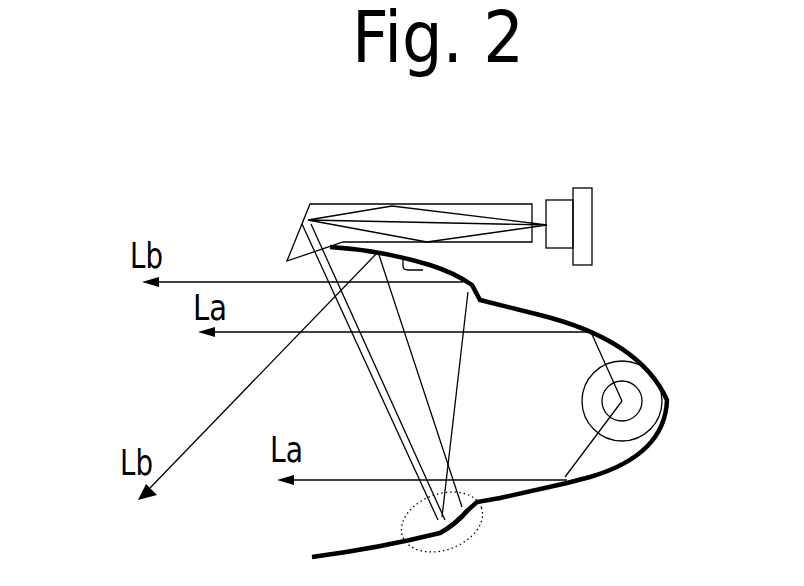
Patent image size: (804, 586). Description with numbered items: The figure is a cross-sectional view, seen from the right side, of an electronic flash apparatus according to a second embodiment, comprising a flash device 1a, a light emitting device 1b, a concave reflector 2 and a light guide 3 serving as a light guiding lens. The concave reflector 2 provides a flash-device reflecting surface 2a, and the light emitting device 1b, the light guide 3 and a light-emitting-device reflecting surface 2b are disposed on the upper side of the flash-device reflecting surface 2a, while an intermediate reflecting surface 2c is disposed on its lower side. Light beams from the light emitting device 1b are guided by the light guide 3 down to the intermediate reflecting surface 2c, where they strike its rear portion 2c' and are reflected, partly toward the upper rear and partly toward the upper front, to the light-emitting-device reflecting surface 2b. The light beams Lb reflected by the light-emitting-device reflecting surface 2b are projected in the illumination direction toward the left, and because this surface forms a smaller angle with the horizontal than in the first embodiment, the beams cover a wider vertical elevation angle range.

The flash device 1a is at (622, 401).
The light emitting device 1b is at (547, 225).
The concave reflector 2 is at (623, 323).
The flash-device reflecting surface 2a is at (548, 320).
The light-emitting-device reflecting surface 2b is at (430, 267).
The intermediate reflecting surface 2c is at (400, 517).
The rear portion of the intermediate reflecting surface 2c' is at (476, 531).
The light guide 3 is at (421, 192).